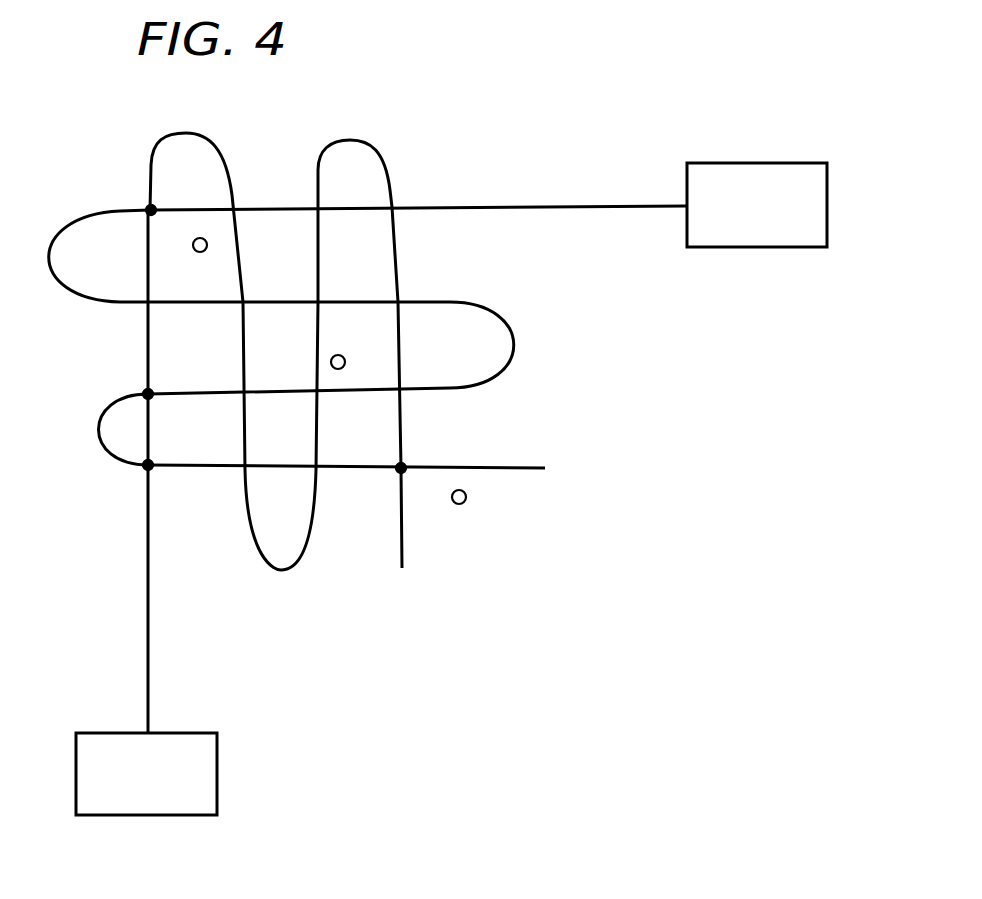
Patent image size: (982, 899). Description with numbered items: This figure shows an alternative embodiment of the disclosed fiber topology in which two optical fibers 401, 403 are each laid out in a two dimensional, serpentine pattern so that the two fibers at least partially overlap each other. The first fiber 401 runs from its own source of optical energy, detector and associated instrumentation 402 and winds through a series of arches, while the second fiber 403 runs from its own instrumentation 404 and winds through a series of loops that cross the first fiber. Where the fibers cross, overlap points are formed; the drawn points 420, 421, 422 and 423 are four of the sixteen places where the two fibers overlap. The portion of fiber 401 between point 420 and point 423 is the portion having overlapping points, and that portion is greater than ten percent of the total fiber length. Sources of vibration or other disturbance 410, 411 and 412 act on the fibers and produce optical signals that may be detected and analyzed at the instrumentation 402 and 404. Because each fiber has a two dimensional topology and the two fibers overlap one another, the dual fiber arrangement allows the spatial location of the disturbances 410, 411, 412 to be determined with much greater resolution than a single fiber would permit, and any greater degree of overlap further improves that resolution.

The fiber 401 is at (148, 657).
The source of optical energy, detector and associated instrumentation 402 is at (168, 786).
The fiber 403 is at (570, 206).
The source of optical energy, detector and associated instrumentation 404 is at (778, 217).
The source of vibration or other disturbance 410 is at (201, 252).
The source of vibration or other disturbance 411 is at (345, 358).
The source of vibration or other disturbance 412 is at (466, 497).
The overlap point 420 is at (148, 466).
The overlap point 421 is at (148, 394).
The overlap point 422 is at (150, 208).
The overlap point 423 is at (401, 468).